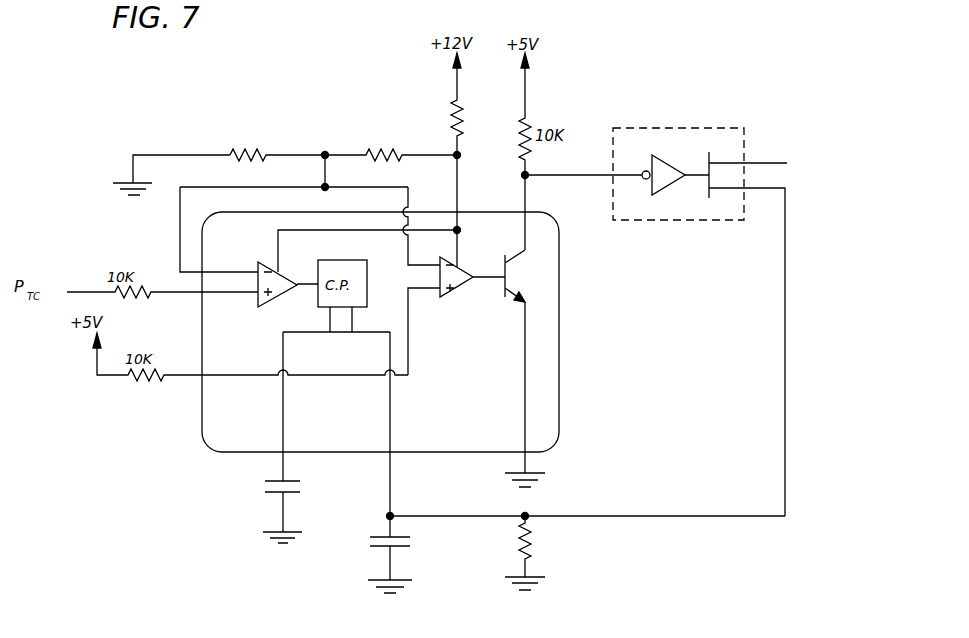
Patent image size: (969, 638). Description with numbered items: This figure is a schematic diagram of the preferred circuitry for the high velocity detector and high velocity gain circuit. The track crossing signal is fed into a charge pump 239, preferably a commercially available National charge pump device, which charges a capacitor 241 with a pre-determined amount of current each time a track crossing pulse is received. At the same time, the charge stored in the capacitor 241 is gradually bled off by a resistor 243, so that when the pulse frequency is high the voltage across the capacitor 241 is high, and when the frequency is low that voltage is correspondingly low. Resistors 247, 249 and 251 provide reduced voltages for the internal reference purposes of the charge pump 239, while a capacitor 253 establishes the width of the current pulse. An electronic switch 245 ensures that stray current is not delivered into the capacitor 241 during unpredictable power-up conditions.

The charge pump 239 is at (206, 450).
The capacitor 241 is at (400, 549).
The resistor 243 is at (535, 561).
The electronic switch 245 is at (690, 128).
The resistor 247 is at (234, 161).
The resistor 249 is at (370, 161).
The resistor 251 is at (484, 108).
The capacitor 253 is at (268, 494).